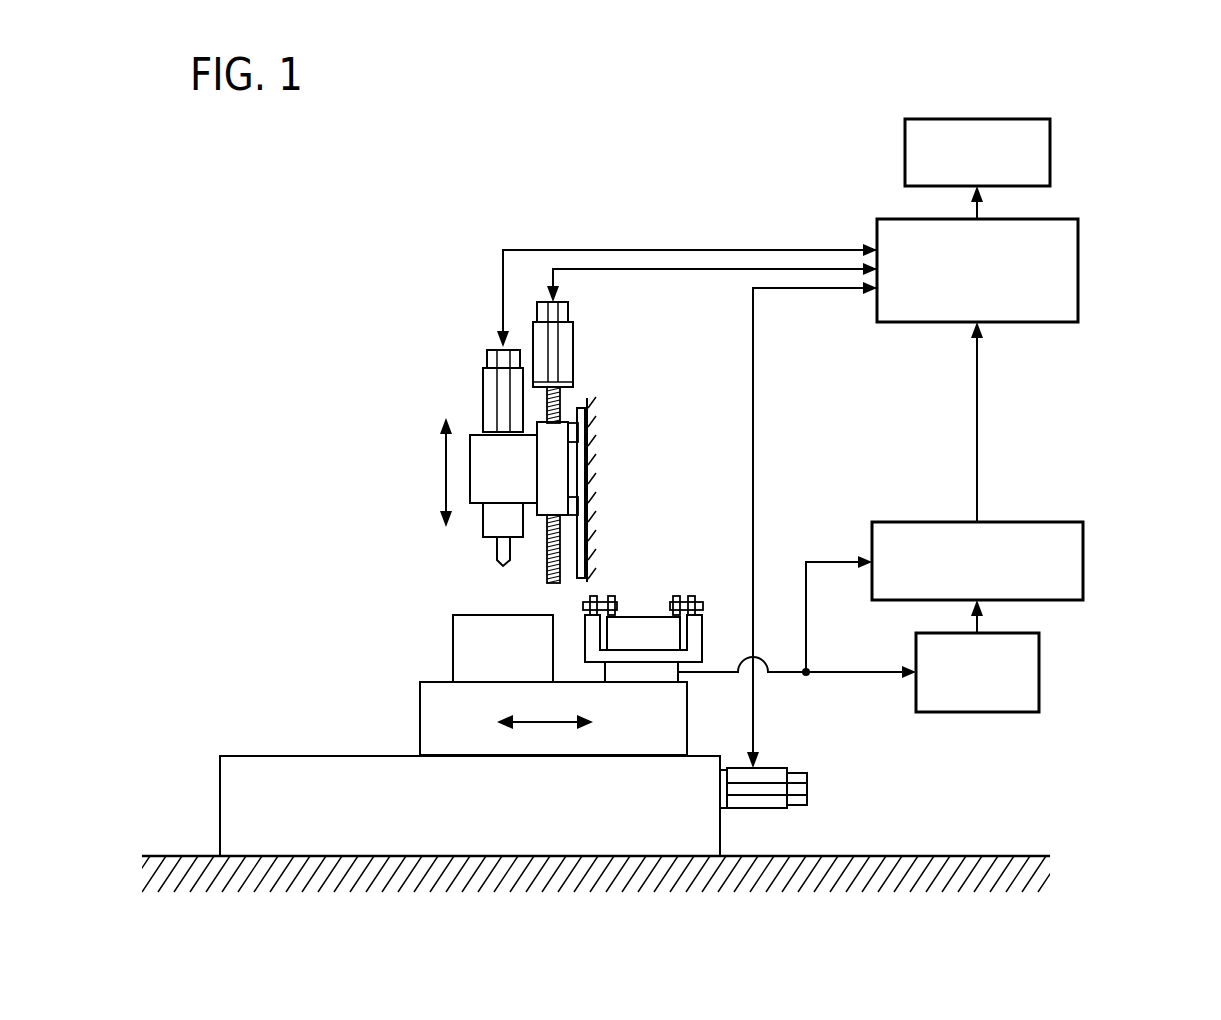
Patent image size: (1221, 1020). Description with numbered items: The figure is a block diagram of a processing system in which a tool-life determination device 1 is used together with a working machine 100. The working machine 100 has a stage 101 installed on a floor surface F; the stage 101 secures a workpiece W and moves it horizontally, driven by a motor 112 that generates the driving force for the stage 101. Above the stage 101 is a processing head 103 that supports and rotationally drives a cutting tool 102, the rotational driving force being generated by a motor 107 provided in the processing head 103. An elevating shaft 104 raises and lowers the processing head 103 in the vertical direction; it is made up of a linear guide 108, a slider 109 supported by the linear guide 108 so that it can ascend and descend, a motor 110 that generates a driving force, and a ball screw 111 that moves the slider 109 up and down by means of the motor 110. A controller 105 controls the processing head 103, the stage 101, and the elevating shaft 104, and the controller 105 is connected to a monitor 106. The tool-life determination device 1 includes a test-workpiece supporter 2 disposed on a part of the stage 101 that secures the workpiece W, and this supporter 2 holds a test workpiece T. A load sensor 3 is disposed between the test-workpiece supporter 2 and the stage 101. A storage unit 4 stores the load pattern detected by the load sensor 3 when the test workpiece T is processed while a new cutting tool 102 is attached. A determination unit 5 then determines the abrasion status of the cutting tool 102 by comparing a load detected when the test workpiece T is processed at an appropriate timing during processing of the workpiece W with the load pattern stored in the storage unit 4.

The working machine 100 is at (452, 147).
The stage 101 is at (420, 718).
The cutting tool 102 is at (497, 552).
The processing head 103 is at (483, 520).
The elevating shaft 104 is at (472, 436).
The controller 105 is at (1078, 268).
The monitor 106 is at (978, 118).
The motor 107 is at (483, 390).
The linear guide 108 is at (590, 483).
The slider 109 is at (587, 462).
The motor 110 is at (573, 347).
The ball screw 111 is at (547, 560).
The motor 112 is at (807, 790).
The tool-life determination device 1 is at (819, 536).
The test-workpiece supporter 2 is at (700, 628).
The load sensor 3 is at (638, 683).
The storage unit 4 is at (1039, 670).
The determination unit 5 is at (1083, 560).
The workpiece W is at (453, 647).
The test workpiece T is at (643, 615).
The floor surface F is at (172, 855).